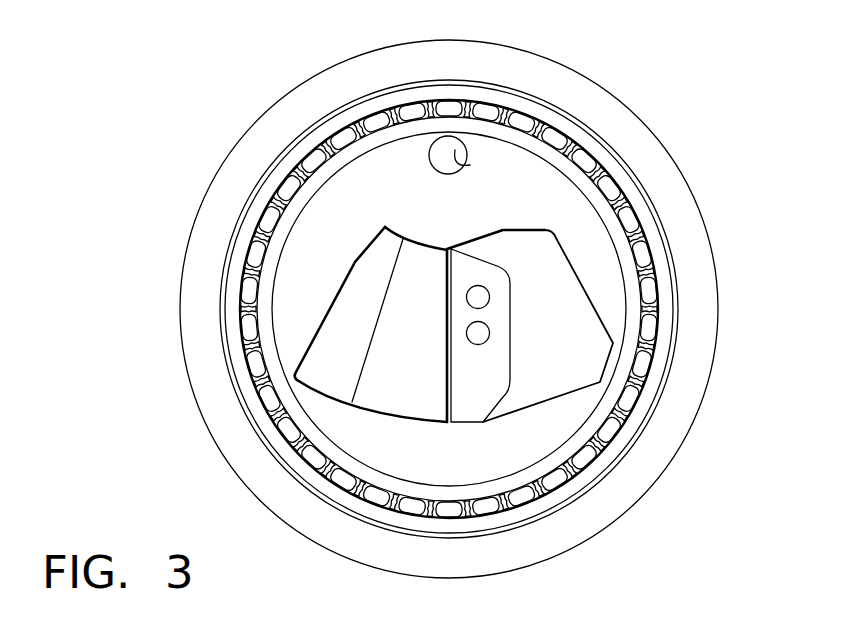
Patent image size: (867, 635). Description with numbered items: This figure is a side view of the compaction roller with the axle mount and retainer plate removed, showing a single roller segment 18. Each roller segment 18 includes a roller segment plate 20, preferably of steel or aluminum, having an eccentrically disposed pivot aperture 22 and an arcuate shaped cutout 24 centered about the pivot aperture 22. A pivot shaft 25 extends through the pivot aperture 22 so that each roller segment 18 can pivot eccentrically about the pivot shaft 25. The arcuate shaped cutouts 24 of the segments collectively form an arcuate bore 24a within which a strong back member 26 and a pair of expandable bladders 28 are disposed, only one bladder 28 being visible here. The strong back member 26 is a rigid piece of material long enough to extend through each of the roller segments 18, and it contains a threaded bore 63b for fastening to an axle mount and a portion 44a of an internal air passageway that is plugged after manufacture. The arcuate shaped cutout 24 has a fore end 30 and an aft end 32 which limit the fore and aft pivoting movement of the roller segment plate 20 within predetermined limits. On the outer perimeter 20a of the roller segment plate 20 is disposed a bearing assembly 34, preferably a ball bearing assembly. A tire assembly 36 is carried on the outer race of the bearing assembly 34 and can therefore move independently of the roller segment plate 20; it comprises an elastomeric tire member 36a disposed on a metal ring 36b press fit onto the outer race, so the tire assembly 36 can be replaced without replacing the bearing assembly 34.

The roller segment 18 is at (220, 141).
The tire assembly 36 is at (417, 269).
The elastomeric tire member 36a is at (635, 133).
The metal ring 36b is at (568, 110).
The bearing assembly 34 is at (452, 506).
The roller segment plate 20 is at (375, 309).
The outer perimeter 20a is at (275, 275).
The pivot aperture 22 is at (449, 158).
The pivot shaft 25 is at (470, 165).
The expandable bladder 28 is at (370, 336).
The fore end 30 is at (350, 277).
The arcuate bore 24a is at (332, 372).
The strong back member 26 is at (514, 335).
The threaded bore 63b is at (489, 297).
The portion of the passageway 44a is at (489, 333).
The arcuate shaped cutout 24 is at (530, 307).
The aft end 32 is at (556, 236).